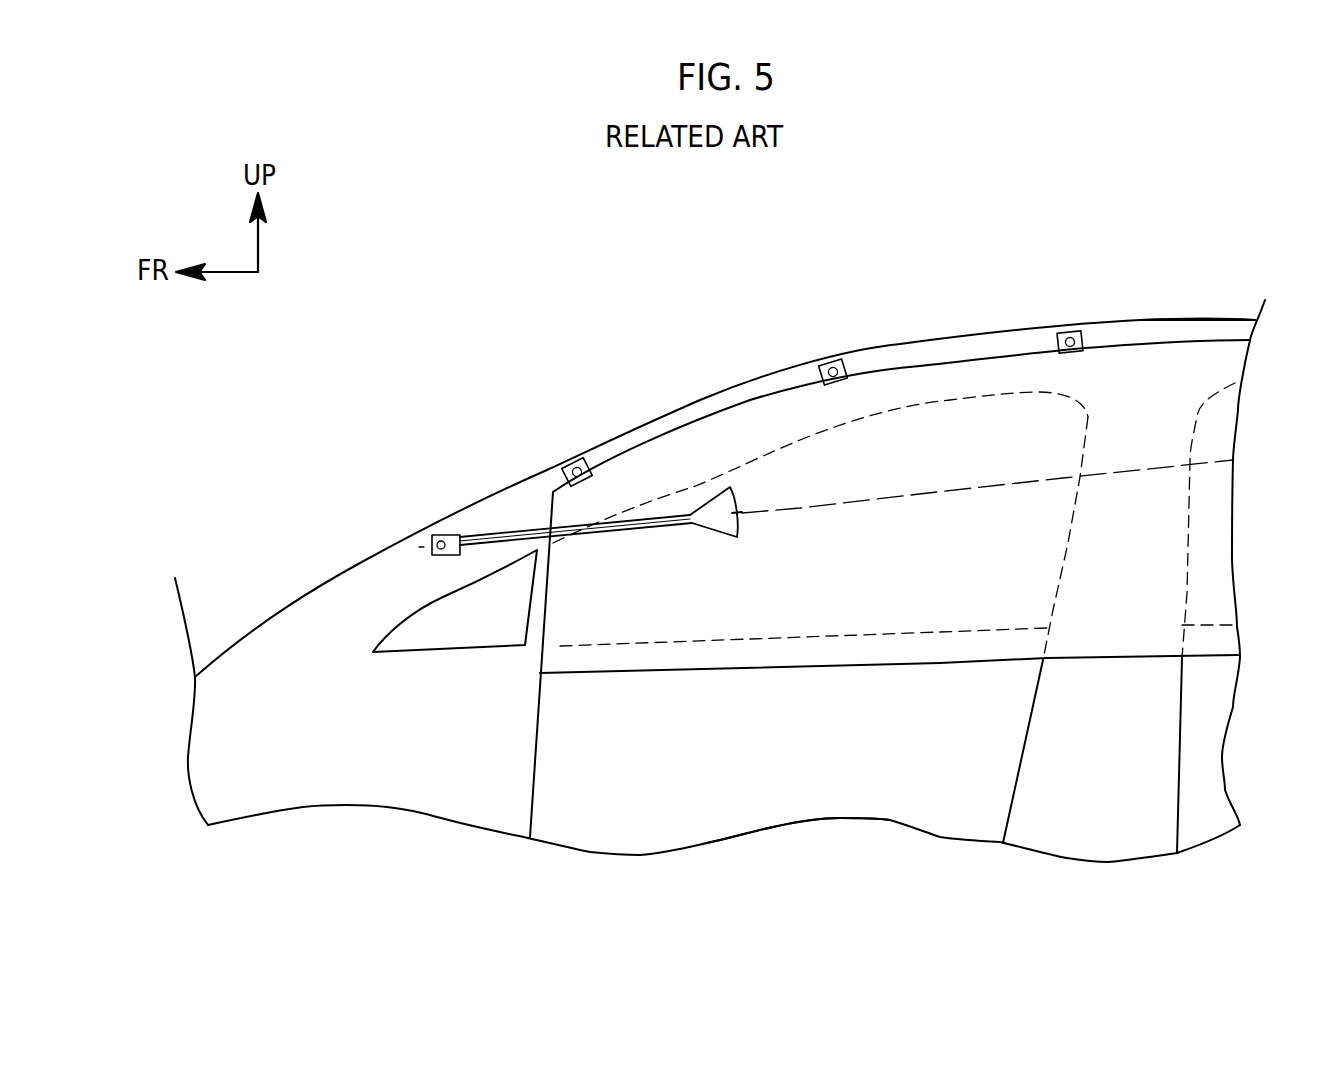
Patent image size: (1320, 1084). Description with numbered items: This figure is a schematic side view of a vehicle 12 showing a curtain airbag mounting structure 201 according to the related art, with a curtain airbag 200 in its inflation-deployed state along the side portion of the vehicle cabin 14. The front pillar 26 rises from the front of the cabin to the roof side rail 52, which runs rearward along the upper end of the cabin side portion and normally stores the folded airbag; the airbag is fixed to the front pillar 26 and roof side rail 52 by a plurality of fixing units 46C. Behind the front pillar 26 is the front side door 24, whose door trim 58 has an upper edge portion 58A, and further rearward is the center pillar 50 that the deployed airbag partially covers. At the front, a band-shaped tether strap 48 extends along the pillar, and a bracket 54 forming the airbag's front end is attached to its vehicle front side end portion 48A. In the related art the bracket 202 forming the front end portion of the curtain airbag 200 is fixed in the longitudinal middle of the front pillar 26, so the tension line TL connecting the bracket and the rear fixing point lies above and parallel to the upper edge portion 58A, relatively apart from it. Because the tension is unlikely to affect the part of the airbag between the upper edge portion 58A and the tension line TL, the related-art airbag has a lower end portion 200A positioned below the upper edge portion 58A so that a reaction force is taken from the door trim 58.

The vehicle 12 is at (693, 275).
The vehicle cabin 14 is at (611, 773).
The front side door 24 is at (837, 830).
The front pillar 26 is at (543, 437).
The fixing unit 46C is at (565, 458).
The tether strap 48 is at (651, 530).
The vehicle front side end portion 48A is at (463, 537).
The center pillar 50 is at (1107, 697).
The roof side rail 52 is at (1188, 335).
The bracket 54 is at (440, 533).
The door trim 58 is at (845, 712).
The upper edge portion 58A is at (948, 633).
The curtain airbag 200 is at (752, 652).
The lower end portion 200A is at (900, 680).
The curtain airbag mounting structure 201 is at (673, 353).
The bracket 202 is at (443, 557).
The tension line TL is at (870, 500).